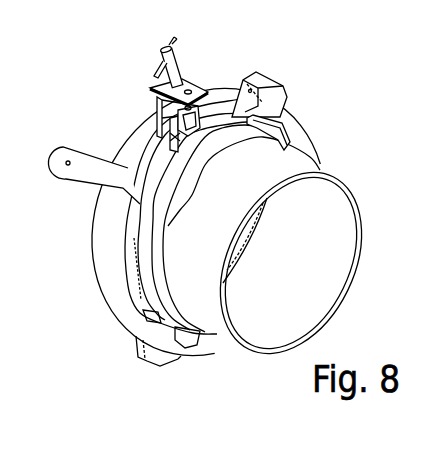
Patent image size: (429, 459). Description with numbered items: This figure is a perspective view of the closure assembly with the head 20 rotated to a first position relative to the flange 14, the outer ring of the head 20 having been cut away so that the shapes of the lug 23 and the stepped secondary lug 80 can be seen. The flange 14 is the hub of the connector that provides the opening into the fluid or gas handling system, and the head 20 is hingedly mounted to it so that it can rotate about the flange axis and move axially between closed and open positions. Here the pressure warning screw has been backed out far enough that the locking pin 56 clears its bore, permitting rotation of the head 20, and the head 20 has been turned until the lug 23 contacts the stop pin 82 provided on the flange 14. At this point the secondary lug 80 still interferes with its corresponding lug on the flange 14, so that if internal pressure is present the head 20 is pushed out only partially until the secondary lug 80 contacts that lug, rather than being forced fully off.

The head 20 is at (108, 242).
The flange 14 is at (130, 185).
The stepped secondary lug 80 is at (172, 136).
The locking pin 56 is at (199, 88).
The inwardly projecting arcuate lug 23 is at (237, 97).
The stop pin 82 is at (270, 117).